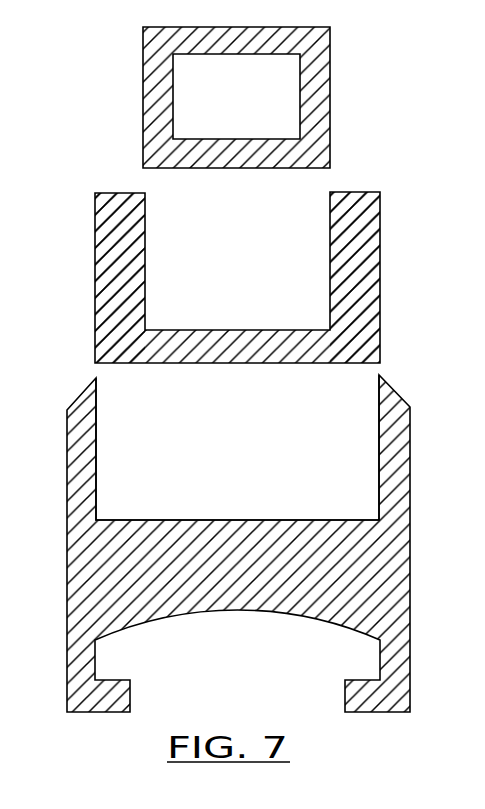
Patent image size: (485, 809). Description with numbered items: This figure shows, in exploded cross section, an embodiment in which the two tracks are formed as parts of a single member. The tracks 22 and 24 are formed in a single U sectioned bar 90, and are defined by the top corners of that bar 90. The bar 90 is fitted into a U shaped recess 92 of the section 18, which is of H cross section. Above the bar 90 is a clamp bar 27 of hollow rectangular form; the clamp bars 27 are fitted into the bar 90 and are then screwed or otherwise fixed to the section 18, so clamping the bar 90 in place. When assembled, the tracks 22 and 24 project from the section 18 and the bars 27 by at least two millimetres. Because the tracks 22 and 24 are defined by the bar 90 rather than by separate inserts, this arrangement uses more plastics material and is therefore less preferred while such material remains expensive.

The section 18 is at (409, 455).
The track 22 is at (95, 198).
The track 24 is at (380, 222).
The clamp bar 27 is at (147, 104).
The U sectioned bar 90 is at (110, 282).
The U shaped recess 92 is at (253, 491).